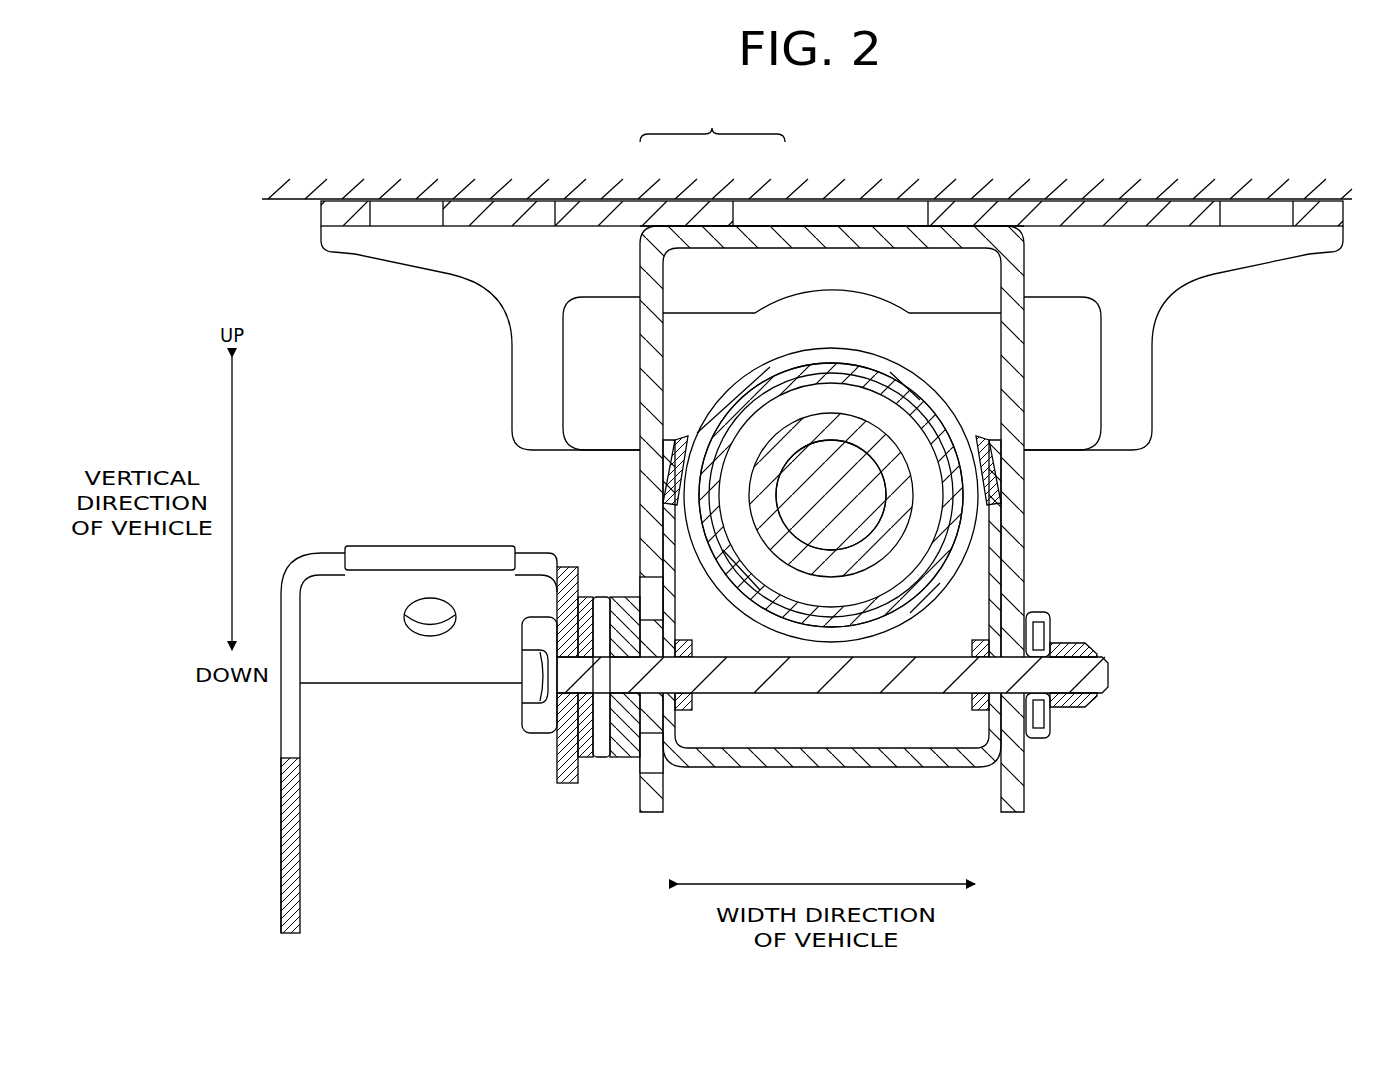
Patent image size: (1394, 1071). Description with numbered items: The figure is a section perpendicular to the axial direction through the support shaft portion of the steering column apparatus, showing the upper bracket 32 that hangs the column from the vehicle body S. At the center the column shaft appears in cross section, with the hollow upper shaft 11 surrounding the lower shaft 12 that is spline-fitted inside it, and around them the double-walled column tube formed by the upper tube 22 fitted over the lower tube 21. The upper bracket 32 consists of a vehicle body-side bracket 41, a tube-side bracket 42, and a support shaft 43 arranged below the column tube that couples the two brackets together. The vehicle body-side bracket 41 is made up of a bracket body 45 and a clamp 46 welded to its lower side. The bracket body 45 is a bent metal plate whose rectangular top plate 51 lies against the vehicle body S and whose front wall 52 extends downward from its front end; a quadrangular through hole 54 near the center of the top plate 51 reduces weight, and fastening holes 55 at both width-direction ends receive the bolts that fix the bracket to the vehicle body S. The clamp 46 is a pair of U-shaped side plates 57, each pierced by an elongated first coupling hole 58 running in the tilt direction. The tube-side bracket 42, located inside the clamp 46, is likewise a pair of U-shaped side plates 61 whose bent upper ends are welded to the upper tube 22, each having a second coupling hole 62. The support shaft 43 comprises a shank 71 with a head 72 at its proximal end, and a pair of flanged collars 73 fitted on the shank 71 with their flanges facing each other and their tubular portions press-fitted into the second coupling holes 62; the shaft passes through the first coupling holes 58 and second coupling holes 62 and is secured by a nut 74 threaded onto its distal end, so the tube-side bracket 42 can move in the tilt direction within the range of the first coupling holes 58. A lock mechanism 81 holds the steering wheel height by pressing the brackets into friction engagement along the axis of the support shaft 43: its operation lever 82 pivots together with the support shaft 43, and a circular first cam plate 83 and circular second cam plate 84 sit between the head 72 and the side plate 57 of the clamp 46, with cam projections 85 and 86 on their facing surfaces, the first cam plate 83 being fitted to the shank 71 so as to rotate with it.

The upper shaft 11 is at (920, 394).
The lower shaft 12 is at (870, 472).
The lower tube 21 is at (836, 366).
The upper tube 22 is at (738, 390).
The upper bracket 32 is at (219, 131).
The vehicle body-side bracket 41 is at (712, 117).
The tube-side bracket 42 is at (700, 768).
The support shaft 43 is at (522, 618).
The bracket body 45 is at (650, 202).
The clamp 46 is at (772, 226).
The top plate 51 is at (1058, 212).
The front wall 52 is at (1166, 288).
The through hole 54 is at (926, 203).
The fastening holes 55 is at (380, 232).
The side plates 57 is at (648, 402).
The first coupling hole 58 is at (652, 576).
The side plates 61 is at (672, 452).
The second coupling hole 62 is at (694, 700).
The shank 71 is at (832, 692).
The head 72 is at (534, 736).
The collars 73 is at (692, 642).
The nut 74 is at (1098, 650).
The lock mechanism 81 is at (497, 893).
The operation lever 82 is at (300, 845).
The first cam plate 83 is at (576, 592).
The second cam plate 84 is at (620, 597).
The cam projection 85 is at (588, 758).
The cam projection 86 is at (620, 758).
The vehicle body S is at (342, 192).